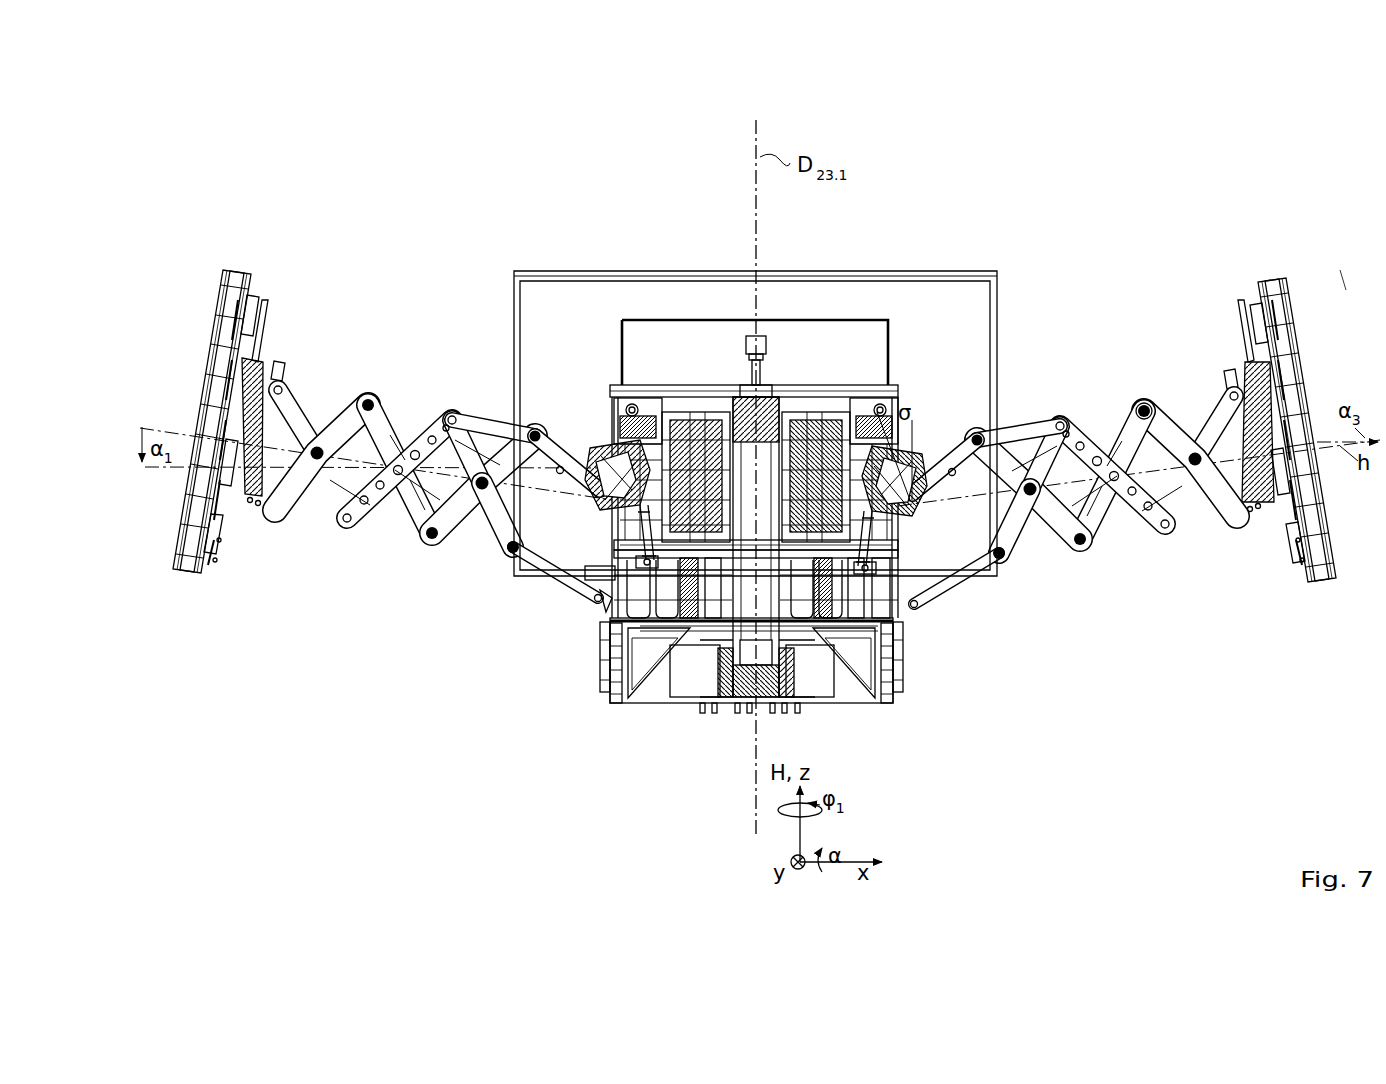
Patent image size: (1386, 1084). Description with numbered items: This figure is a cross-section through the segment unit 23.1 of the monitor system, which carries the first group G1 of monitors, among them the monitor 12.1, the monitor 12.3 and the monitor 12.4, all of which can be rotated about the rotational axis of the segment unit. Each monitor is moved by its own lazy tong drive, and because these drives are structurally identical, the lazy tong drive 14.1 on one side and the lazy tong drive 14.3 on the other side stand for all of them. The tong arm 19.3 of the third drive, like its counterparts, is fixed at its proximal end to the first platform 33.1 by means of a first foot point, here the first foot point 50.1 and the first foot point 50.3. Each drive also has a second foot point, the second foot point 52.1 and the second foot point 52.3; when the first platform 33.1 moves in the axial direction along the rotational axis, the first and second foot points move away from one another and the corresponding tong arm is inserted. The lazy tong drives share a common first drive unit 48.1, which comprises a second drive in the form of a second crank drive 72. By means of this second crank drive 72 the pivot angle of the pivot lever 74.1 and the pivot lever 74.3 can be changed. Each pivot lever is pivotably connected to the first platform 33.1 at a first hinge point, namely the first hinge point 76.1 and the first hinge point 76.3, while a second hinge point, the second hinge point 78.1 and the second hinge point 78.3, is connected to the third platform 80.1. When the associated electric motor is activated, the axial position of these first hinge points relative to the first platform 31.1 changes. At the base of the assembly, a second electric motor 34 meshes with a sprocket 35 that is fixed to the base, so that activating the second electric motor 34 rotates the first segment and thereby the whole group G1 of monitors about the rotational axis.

The monitor 12.1 is at (185, 572).
The monitor 12.3 is at (1292, 390).
The monitor 12.4 is at (823, 303).
The lazy tong drive 14.1 is at (243, 683).
The lazy tong drive 14.3 is at (1212, 273).
The tong arm 19.3 is at (1167, 370).
The segment unit 23.1 is at (1133, 176).
The first platform 31.1 is at (893, 595).
The first platform 33.1 is at (625, 428).
The second electric motor 34 is at (790, 660).
The sprocket 35 is at (702, 703).
The first drive unit 48.1 is at (916, 398).
The first foot point 50.1 is at (612, 443).
The first foot point 50.3 is at (890, 437).
The second foot point 52.1 is at (610, 623).
The second foot point 52.3 is at (893, 625).
The second crank drive 72 is at (590, 573).
The pivot lever 74.1 is at (640, 495).
The pivot lever 74.3 is at (900, 505).
The first hinge point 76.1 is at (625, 520).
The first hinge point 76.3 is at (880, 490).
The second hinge point 78.1 is at (615, 545).
The second hinge point 78.3 is at (765, 685).
The third platform 80.1 is at (612, 593).
The first group of monitors G1 is at (1345, 263).